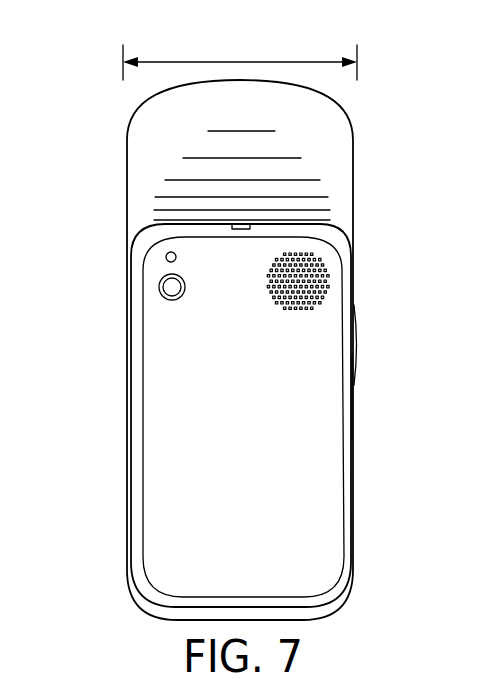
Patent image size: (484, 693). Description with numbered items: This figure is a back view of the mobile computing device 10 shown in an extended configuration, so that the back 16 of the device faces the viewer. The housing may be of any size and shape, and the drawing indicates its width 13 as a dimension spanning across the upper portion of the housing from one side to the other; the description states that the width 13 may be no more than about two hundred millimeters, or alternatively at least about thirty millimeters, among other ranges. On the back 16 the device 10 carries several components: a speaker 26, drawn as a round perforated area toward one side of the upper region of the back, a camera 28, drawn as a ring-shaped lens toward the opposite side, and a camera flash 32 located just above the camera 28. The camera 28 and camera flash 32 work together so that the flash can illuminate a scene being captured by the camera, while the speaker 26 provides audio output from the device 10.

The device 10 is at (365, 105).
The width 13 is at (240, 62).
The back 16 is at (248, 442).
The speaker 26 is at (318, 262).
The camera 28 is at (166, 294).
The camera flash 32 is at (167, 254).